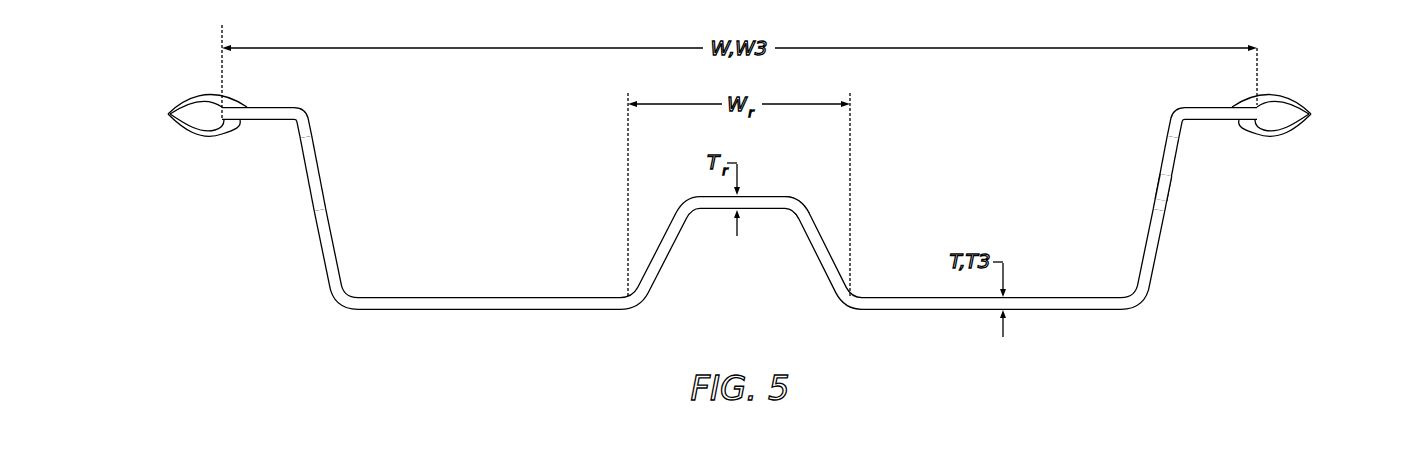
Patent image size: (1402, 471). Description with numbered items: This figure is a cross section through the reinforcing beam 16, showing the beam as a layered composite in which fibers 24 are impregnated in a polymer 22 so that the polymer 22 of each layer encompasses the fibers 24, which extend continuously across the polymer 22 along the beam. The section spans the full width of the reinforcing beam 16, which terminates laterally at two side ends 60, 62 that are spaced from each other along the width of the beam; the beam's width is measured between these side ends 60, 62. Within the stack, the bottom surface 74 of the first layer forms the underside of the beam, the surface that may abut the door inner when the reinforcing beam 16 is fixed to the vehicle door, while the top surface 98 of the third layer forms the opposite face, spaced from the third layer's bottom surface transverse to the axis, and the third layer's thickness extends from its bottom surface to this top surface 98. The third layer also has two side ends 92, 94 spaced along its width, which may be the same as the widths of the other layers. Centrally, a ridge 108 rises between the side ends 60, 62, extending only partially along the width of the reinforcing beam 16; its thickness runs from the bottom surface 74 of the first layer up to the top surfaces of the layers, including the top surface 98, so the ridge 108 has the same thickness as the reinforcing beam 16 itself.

The reinforcing beam 16 is at (238, 229).
The polymer 22 is at (303, 108).
The fibers 24 is at (168, 114).
The side end 60 is at (1179, 184).
The side end 62 is at (304, 202).
The bottom surface 74 is at (390, 310).
The side end 92 is at (1156, 266).
The side end 94 is at (317, 229).
The top surface 98 is at (400, 297).
The ridge 108 is at (802, 194).